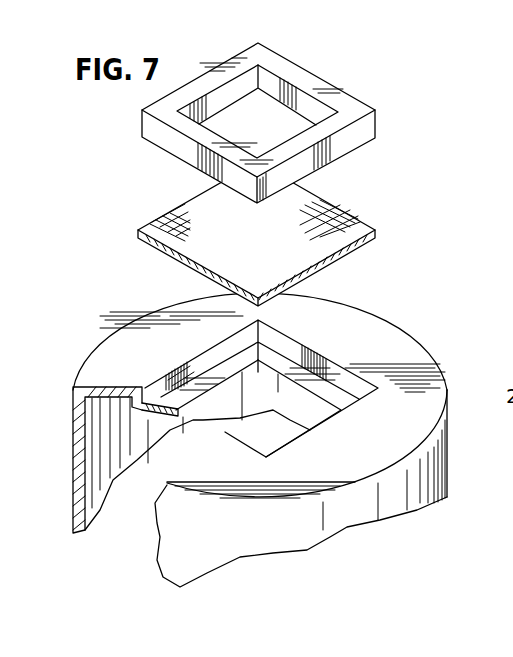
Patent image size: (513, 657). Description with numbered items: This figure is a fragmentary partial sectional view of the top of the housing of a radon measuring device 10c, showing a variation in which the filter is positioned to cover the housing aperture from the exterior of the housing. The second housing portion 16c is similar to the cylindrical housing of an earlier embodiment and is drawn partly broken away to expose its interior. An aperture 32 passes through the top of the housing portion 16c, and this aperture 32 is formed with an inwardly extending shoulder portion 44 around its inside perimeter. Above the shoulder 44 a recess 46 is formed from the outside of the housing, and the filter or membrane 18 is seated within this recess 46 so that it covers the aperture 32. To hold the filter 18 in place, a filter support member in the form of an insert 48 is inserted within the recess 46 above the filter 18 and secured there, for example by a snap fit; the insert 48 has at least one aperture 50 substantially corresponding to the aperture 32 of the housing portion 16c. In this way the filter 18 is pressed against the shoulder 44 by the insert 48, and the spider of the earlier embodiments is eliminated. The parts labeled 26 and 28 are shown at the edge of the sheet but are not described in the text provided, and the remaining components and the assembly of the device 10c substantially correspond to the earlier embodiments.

The radon measuring device 10c is at (293, 310).
The second housing portion 16c is at (448, 376).
The filter 18 is at (343, 212).
The lead 26 is at (512, 507).
The lead 28 is at (496, 584).
The aperture 32 is at (276, 390).
The shoulder portion 44 is at (328, 390).
The recess 46 is at (193, 370).
The insert 48 is at (347, 102).
The aperture 50 is at (282, 105).